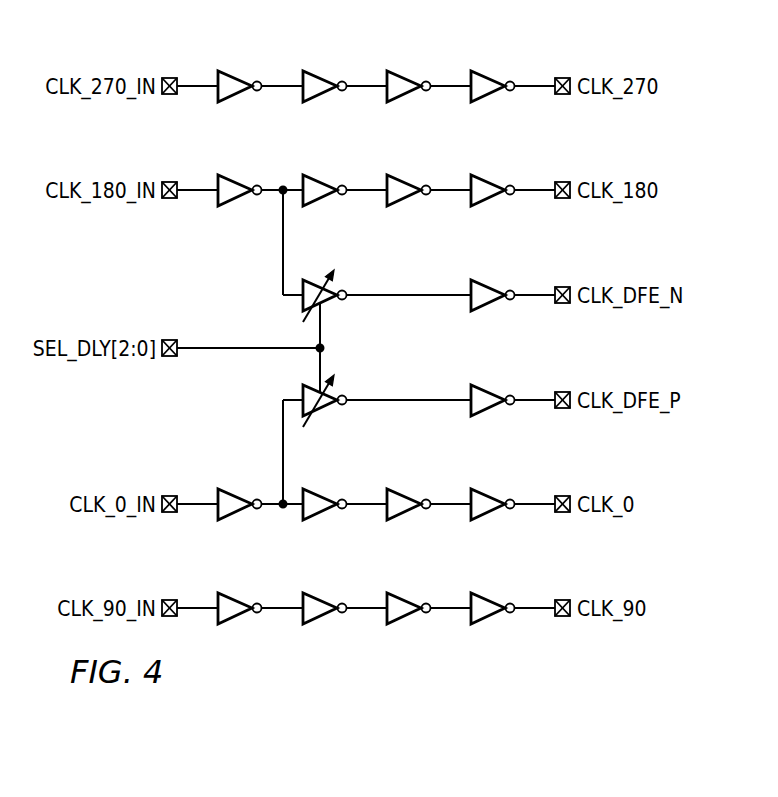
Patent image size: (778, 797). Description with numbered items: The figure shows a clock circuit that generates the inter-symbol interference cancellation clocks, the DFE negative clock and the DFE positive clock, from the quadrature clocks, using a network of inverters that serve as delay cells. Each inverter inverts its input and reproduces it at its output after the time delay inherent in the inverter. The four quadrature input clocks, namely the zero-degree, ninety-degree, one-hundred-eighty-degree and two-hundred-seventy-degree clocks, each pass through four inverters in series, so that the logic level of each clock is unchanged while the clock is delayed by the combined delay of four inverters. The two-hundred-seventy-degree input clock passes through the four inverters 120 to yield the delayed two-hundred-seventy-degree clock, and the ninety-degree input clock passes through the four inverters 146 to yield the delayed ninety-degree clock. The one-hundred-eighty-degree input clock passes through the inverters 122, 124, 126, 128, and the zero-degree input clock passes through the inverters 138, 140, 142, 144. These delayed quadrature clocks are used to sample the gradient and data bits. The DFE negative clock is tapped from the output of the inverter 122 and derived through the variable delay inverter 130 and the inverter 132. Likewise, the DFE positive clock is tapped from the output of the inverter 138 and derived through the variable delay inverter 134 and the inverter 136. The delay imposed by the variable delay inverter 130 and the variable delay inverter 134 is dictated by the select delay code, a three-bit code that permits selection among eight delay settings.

The inverters 120 is at (505, 58).
The inverter 122 is at (240, 179).
The inverter 124 is at (325, 179).
The inverter 126 is at (409, 179).
The inverter 128 is at (493, 179).
The variable delay inverter 130 is at (327, 301).
The inverter 132 is at (493, 284).
The variable delay inverter 134 is at (327, 406).
The inverter 136 is at (492, 411).
The inverter 138 is at (239, 515).
The inverter 140 is at (324, 515).
The inverter 142 is at (408, 515).
The inverter 144 is at (492, 515).
The inverters 146 is at (239, 619).